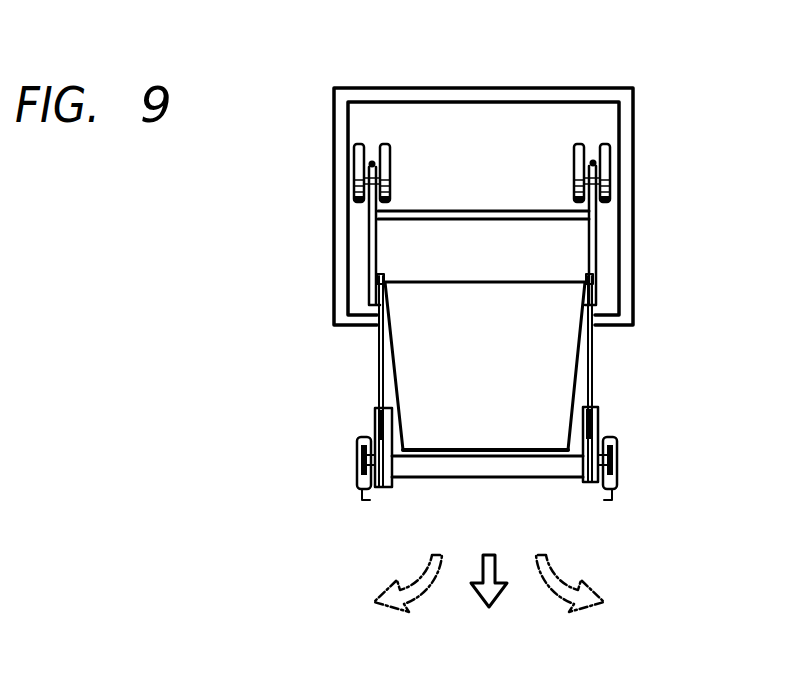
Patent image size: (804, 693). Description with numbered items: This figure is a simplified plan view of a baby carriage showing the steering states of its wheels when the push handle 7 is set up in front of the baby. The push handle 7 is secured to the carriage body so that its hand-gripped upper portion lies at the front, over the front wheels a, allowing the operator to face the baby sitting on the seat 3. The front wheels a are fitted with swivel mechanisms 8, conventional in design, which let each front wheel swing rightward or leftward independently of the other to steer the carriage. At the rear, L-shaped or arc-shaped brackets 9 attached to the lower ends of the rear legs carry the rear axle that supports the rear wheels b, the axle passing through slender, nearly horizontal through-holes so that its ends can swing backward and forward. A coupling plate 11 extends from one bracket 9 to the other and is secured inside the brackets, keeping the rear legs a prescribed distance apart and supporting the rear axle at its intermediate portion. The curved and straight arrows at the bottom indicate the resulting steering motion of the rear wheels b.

The push handle 7 is at (481, 88).
The front wheels a is at (389, 164).
The swivel mechanisms 8 is at (386, 202).
The seat 3 is at (500, 373).
The brackets 9 is at (386, 461).
The coupling plate 11 is at (492, 478).
The rear wheels b is at (358, 468).